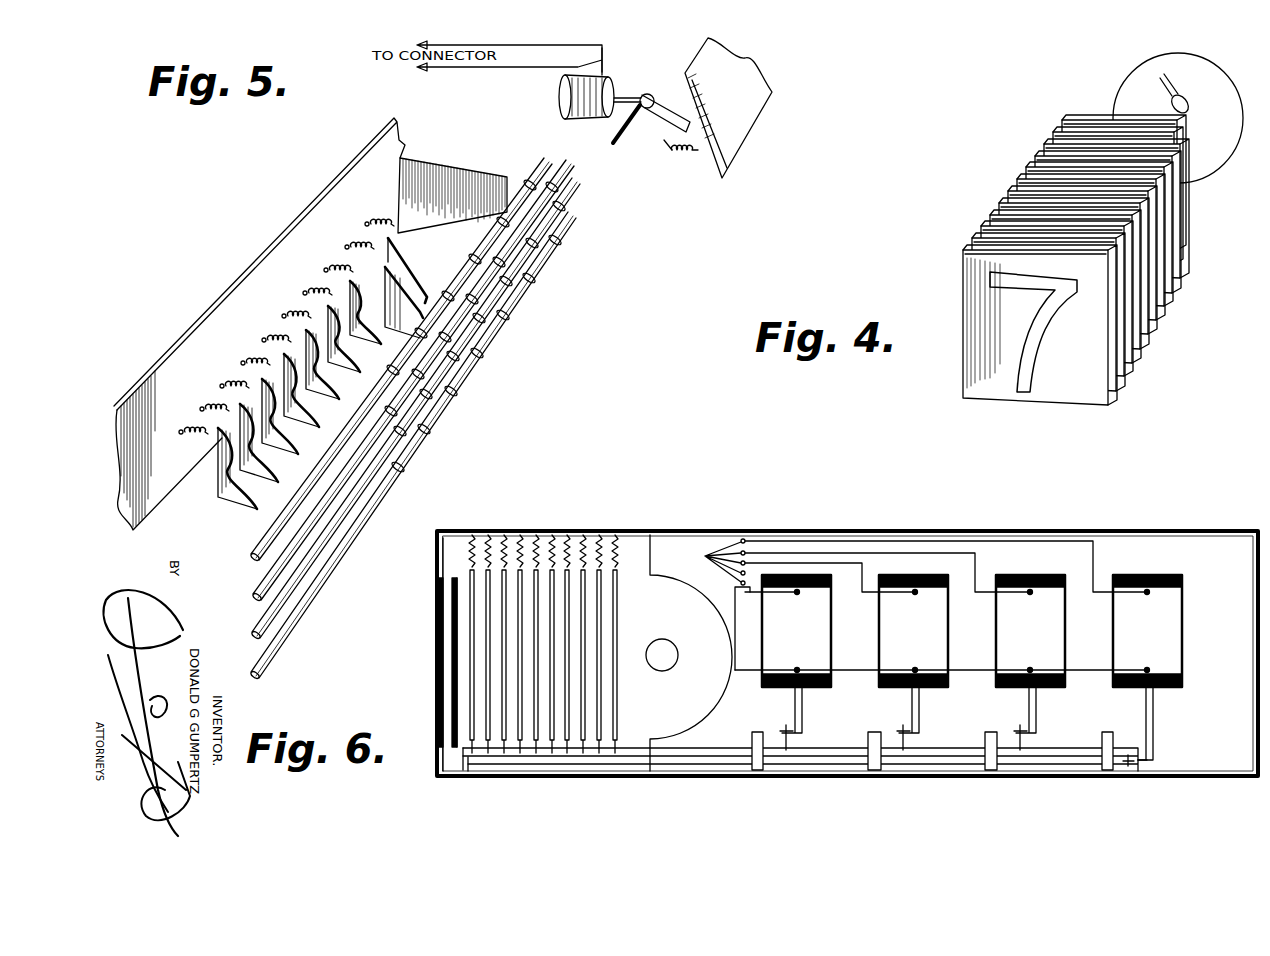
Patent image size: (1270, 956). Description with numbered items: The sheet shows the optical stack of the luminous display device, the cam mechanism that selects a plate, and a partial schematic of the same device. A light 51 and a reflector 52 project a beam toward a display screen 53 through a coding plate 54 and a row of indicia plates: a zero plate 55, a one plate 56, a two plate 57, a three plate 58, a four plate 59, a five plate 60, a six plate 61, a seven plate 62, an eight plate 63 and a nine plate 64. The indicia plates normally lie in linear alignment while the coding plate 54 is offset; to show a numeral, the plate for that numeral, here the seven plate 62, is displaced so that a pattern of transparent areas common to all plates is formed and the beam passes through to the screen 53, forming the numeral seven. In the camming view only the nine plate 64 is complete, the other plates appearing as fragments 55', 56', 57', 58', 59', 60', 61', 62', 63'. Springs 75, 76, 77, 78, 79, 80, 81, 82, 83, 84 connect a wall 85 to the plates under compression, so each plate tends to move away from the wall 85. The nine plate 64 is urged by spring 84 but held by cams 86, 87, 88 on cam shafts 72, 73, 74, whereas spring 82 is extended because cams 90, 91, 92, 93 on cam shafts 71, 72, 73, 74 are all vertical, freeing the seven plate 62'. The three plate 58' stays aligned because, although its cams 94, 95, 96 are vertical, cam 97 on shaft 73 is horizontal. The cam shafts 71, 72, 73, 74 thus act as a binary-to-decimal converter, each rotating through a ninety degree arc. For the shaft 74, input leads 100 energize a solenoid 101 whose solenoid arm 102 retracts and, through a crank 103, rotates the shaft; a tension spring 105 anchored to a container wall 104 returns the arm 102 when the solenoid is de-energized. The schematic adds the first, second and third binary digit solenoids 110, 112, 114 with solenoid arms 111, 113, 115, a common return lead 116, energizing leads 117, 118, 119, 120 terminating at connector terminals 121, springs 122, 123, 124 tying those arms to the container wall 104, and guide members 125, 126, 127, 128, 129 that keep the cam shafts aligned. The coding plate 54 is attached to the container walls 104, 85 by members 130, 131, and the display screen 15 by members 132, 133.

In FIG. 6, the display screen 15 is at (442, 706).
In FIG. 4, the light 51 is at (1180, 92).
In FIG. 6, the light 51 is at (664, 640).
In FIG. 4, the reflector 52 is at (1216, 106).
In FIG. 6, the reflector 52 is at (700, 710).
In FIG. 4, the display screen 53 is at (963, 251).
In FIG. 4, the coding plate 54 is at (972, 239).
In FIG. 6, the coding plate 54 is at (456, 667).
In FIG. 4, the "0" plate 55 is at (1019, 295).
In FIG. 6, the "0" plate 55 is at (469, 616).
In FIG. 4, the "1" plate 56 is at (1045, 281).
In FIG. 6, the "1" plate 56 is at (486, 627).
In FIG. 4, the "2" plate 57 is at (1042, 269).
In FIG. 6, the "2" plate 57 is at (502, 616).
In FIG. 4, the "3" plate 58 is at (1063, 256).
In FIG. 6, the "3" plate 58 is at (524, 627).
In FIG. 4, the "4" plate 59 is at (1057, 244).
In FIG. 6, the "4" plate 59 is at (541, 616).
In FIG. 4, the "5" plate 60 is at (1079, 230).
In FIG. 6, the "5" plate 60 is at (560, 627).
In FIG. 4, the "6" plate 61 is at (1078, 219).
In FIG. 6, the "6" plate 61 is at (576, 616).
In FIG. 4, the "7" plate 62 is at (1099, 206).
In FIG. 6, the "7" plate 62 is at (594, 627).
In FIG. 4, the "8" plate 63 is at (1090, 192).
In FIG. 6, the "8" plate 63 is at (613, 616).
In FIG. 5, the "9" plate 64 is at (453, 163).
In FIG. 4, the "9" plate 64 is at (1062, 120).
In FIG. 6, the "9" plate 64 is at (612, 568).
In FIG. 5, the "0" plate (fragmentary portion) 55' is at (237, 479).
In FIG. 5, the "1" plate (fragmentary portion) 56' is at (262, 449).
In FIG. 5, the "2" plate (fragmentary portion) 57' is at (284, 422).
In FIG. 5, the "3" plate (fragmentary portion) 58' is at (308, 397).
In FIG. 5, the "4" plate (fragmentary portion) 59' is at (325, 372).
In FIG. 5, the "5" plate (fragmentary portion) 60' is at (345, 347).
In FIG. 5, the "6" plate (fragmentary portion) 61' is at (366, 321).
In FIG. 5, the "7" plate (fragmentary portion) 62' is at (414, 298).
In FIG. 5, the "8" plate (fragmentary portion) 63' is at (416, 269).
In FIG. 5, the cam shaft 71 is at (253, 560).
In FIG. 6, the cam shaft 71 is at (732, 747).
In FIG. 5, the cam shaft 72 is at (255, 599).
In FIG. 6, the cam shaft 72 is at (852, 747).
In FIG. 5, the cam shaft 73 is at (254, 637).
In FIG. 6, the cam shaft 73 is at (972, 747).
In FIG. 5, the cam shaft 74 is at (256, 679).
In FIG. 6, the cam shaft 74 is at (1094, 747).
In FIG. 5, the spring 75 is at (179, 432).
In FIG. 5, the spring 76 is at (200, 409).
In FIG. 5, the spring 77 is at (220, 386).
In FIG. 5, the spring 78 is at (241, 363).
In FIG. 5, the spring 79 is at (262, 340).
In FIG. 5, the spring 80 is at (282, 316).
In FIG. 5, the spring 81 is at (303, 293).
In FIG. 5, the spring 82 is at (324, 270).
In FIG. 5, the spring 83 is at (345, 247).
In FIG. 5, the spring 84 is at (365, 224).
In FIG. 5, the wall 85 is at (252, 262).
In FIG. 6, the wall 85 is at (995, 530).
In FIG. 5, the cam 86 is at (506, 222).
In FIG. 5, the cam 87 is at (535, 245).
In FIG. 5, the cam 88 is at (509, 281).
In FIG. 5, the cam 90 is at (527, 188).
In FIG. 6, the cam 90 is at (575, 760).
In FIG. 5, the cam 91 is at (558, 243).
In FIG. 5, the cam 92 is at (532, 281).
In FIG. 5, the cam 93 is at (480, 354).
In FIG. 5, the cam 94 is at (506, 316).
In FIG. 5, the cam 95 is at (456, 358).
In FIG. 5, the cam 96 is at (427, 431).
In FIG. 5, the cam 97 is at (454, 393).
In FIG. 5, the input leads 100 is at (612, 54).
In FIG. 5, the solenoid 101 is at (560, 96).
In FIG. 6, the solenoid 101 is at (1183, 600).
In FIG. 5, the solenoid arm 102 is at (622, 105).
In FIG. 6, the solenoid arm 102 is at (1154, 700).
In FIG. 5, the crank 103 is at (652, 92).
In FIG. 5, the container wall 104 is at (752, 88).
In FIG. 6, the container wall 104 is at (1218, 777).
In FIG. 5, the spring 105 is at (674, 152).
In FIG. 6, the spring 105 is at (1128, 768).
In FIG. 6, the first binary digit solenoid 110 is at (832, 630).
In FIG. 6, the solenoid arm 111 is at (803, 700).
In FIG. 6, the second binary digit solenoid 112 is at (949, 630).
In FIG. 6, the solenoid arm 113 is at (920, 700).
In FIG. 6, the third binary digit solenoid 114 is at (1066, 630).
In FIG. 6, the solenoid arm 115 is at (1037, 700).
In FIG. 6, the common return lead 116 is at (734, 586).
In FIG. 6, the energizing lead 117 is at (748, 594).
In FIG. 6, the energizing lead 118 is at (864, 594).
In FIG. 6, the energizing lead 119 is at (978, 594).
In FIG. 6, the energizing lead 120 is at (1096, 594).
In FIG. 6, the terminals 121 is at (703, 556).
In FIG. 6, the spring 122 is at (786, 752).
In FIG. 6, the spring 123 is at (903, 752).
In FIG. 6, the spring 124 is at (1020, 752).
In FIG. 6, the first guide member 125 is at (1107, 770).
In FIG. 6, the second guide member 126 is at (991, 770).
In FIG. 6, the third guide member 127 is at (874, 770).
In FIG. 6, the fourth guide member 128 is at (756, 770).
In FIG. 6, the fifth guide member 129 is at (470, 768).
In FIG. 6, the member 130 is at (462, 768).
In FIG. 6, the member 131 is at (454, 576).
In FIG. 6, the member 132 is at (440, 777).
In FIG. 6, the member 133 is at (440, 578).